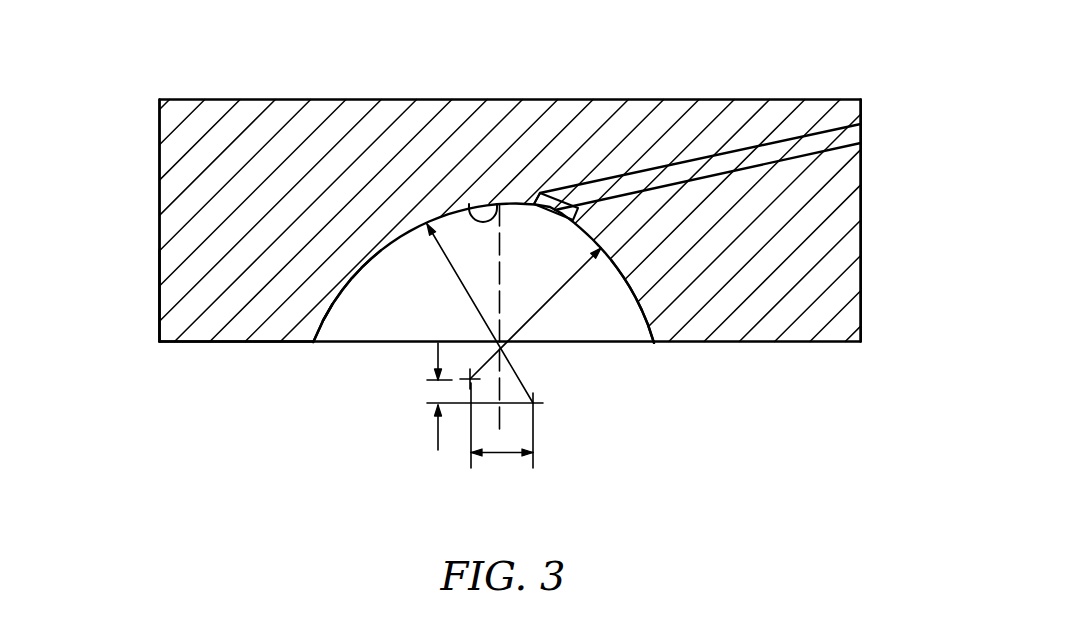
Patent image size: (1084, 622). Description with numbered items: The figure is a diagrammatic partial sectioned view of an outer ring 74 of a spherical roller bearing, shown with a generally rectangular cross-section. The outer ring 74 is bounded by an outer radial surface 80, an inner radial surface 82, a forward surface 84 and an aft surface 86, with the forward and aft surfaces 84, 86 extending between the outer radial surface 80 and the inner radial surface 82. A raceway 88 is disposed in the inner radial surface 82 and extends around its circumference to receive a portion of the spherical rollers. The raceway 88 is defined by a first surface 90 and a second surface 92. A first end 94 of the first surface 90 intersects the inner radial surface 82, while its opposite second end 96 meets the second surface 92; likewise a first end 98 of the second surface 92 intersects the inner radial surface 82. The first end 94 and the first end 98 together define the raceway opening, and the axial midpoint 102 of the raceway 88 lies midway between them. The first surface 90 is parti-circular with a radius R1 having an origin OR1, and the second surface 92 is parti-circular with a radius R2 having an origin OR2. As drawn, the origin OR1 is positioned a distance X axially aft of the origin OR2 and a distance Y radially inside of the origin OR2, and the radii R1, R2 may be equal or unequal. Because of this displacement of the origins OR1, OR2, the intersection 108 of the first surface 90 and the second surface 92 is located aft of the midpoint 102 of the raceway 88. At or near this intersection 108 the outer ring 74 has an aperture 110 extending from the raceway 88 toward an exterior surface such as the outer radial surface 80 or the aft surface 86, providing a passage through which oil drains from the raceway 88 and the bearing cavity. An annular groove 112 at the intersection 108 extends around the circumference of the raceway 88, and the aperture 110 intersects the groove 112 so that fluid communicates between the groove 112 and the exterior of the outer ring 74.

The outer ring 74 is at (147, 217).
The outer radial surface 80 is at (553, 99).
The inner radial surface 82 is at (236, 342).
The forward surface 84 is at (158, 282).
The aft surface 86 is at (862, 243).
The raceway 88 is at (402, 350).
The first surface 90 is at (354, 285).
The second surface 92 is at (624, 302).
The first end of the first surface 94 is at (313, 343).
The second end of the first surface 96 is at (549, 196).
The first end of the second surface 98 is at (653, 343).
The axial midpoint of the raceway 102 is at (479, 204).
The intersection of the first surface and the second surface 108 is at (553, 206).
The aperture 110 is at (755, 155).
The annular groove 112 is at (572, 209).
The origin of radius R1 OR1 is at (537, 405).
The origin of radius R2 OR2 is at (465, 373).
The radius of the first surface R1 is at (480, 313).
The radius of the second surface R2 is at (535, 313).
The axial distance between origins X is at (500, 456).
The radial distance between origins Y is at (438, 440).